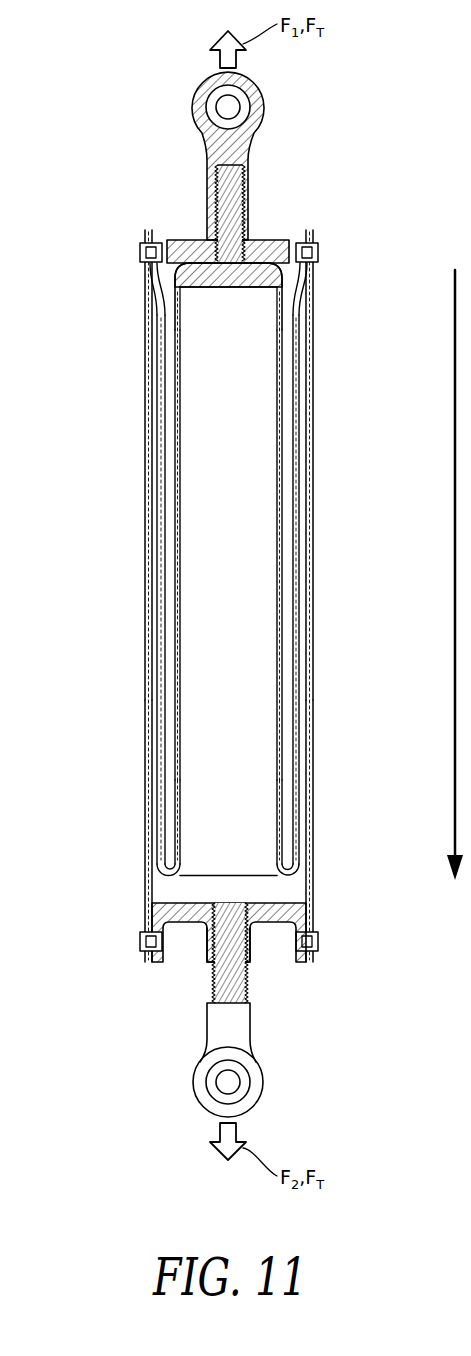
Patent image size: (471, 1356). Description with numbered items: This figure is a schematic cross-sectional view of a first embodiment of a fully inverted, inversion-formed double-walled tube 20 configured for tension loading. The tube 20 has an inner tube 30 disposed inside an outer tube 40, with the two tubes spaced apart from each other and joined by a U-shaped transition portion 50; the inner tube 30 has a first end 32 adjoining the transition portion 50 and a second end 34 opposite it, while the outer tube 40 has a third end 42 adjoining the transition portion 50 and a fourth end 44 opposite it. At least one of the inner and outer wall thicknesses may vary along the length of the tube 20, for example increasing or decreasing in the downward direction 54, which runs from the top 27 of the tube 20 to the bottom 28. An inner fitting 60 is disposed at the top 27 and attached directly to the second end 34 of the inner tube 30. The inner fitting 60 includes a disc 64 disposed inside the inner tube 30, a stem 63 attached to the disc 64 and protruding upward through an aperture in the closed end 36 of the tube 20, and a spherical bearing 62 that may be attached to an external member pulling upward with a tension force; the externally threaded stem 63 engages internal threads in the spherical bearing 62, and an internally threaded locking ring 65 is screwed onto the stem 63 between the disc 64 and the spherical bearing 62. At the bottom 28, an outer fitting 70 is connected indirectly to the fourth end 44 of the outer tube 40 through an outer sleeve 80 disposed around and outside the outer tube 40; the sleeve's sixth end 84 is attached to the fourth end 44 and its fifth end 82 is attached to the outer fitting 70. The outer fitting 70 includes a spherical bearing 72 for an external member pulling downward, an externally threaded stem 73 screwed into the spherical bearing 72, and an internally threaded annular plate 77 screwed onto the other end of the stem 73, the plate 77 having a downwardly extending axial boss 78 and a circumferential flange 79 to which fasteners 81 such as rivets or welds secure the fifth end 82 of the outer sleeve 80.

The double-walled inversion tube 20 is at (115, 222).
The top 27 is at (333, 416).
The bottom 28 is at (322, 794).
The inner tube 30 is at (178, 570).
The first end 32 is at (173, 812).
The second end 34 is at (173, 315).
The closed end 36 is at (212, 306).
The outer tube 40 is at (163, 508).
The third end 42 is at (297, 847).
The fourth end 44 is at (300, 307).
The transition portion 50 is at (160, 865).
The downward direction 54 is at (455, 537).
The inner fitting 60 is at (324, 136).
The spherical bearing 62 is at (200, 107).
The stem 63 is at (222, 215).
The disc 64 is at (178, 275).
The locking ring 65 is at (272, 250).
The outer fitting 70 is at (290, 1003).
The spherical bearing 72 is at (197, 1082).
The stem 73 is at (212, 990).
The annular plate 77 is at (192, 916).
The axial boss 78 is at (240, 938).
The circumferential flange 79 is at (148, 958).
The outer sleeve 80 is at (145, 668).
The fasteners 81 is at (314, 252).
The fifth end 82 is at (142, 876).
The sixth end 84 is at (145, 300).